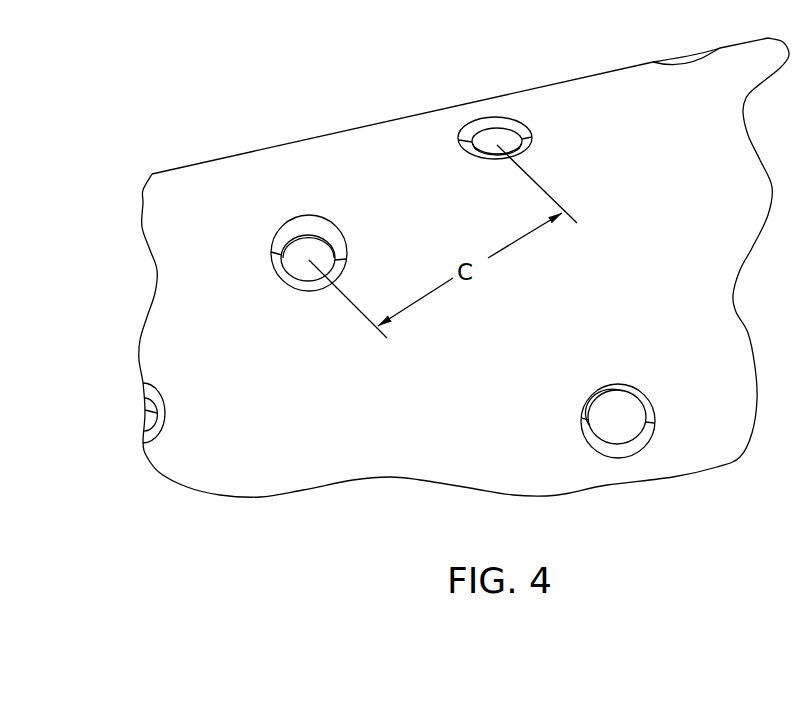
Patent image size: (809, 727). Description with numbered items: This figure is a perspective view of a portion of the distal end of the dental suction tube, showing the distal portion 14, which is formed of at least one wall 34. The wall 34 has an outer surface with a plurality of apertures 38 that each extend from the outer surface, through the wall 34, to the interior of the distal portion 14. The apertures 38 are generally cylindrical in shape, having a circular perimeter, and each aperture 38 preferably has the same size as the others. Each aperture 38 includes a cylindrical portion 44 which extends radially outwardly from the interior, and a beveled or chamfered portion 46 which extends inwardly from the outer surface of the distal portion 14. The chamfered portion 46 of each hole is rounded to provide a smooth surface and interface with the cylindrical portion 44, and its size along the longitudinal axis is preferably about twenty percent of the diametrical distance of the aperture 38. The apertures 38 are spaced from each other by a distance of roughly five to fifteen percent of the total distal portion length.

The distal portion 14 is at (330, 120).
The wall 34 is at (311, 174).
The aperture 38 is at (279, 222).
The cylindrical portion 44 is at (313, 240).
The chamfered portion 46 is at (338, 247).